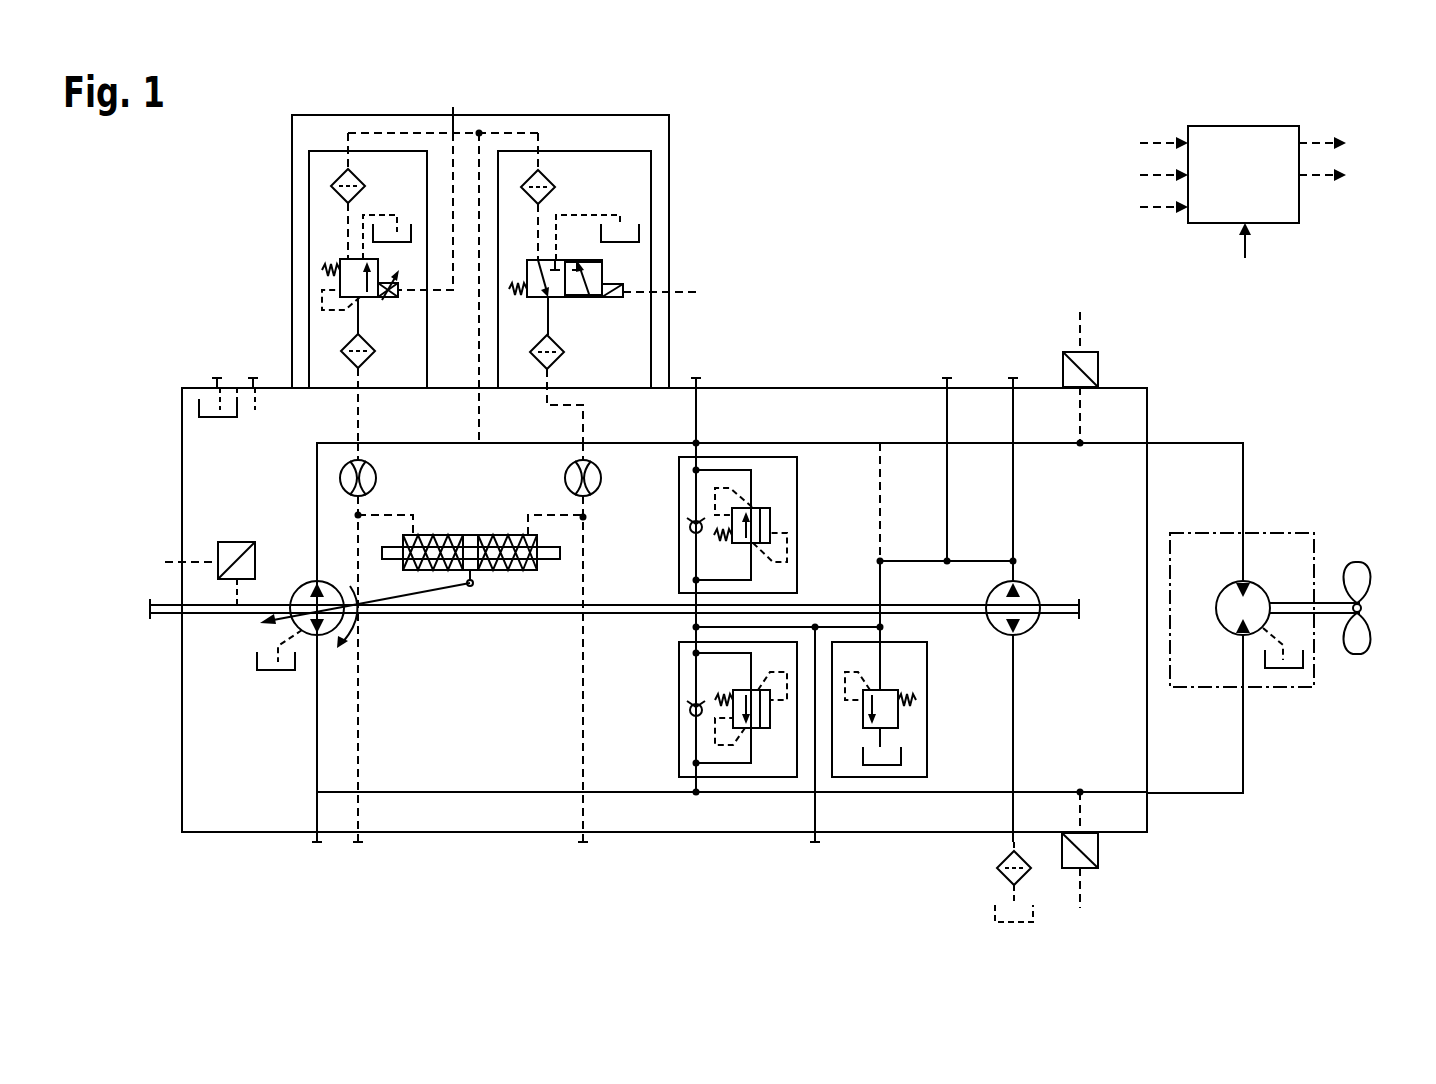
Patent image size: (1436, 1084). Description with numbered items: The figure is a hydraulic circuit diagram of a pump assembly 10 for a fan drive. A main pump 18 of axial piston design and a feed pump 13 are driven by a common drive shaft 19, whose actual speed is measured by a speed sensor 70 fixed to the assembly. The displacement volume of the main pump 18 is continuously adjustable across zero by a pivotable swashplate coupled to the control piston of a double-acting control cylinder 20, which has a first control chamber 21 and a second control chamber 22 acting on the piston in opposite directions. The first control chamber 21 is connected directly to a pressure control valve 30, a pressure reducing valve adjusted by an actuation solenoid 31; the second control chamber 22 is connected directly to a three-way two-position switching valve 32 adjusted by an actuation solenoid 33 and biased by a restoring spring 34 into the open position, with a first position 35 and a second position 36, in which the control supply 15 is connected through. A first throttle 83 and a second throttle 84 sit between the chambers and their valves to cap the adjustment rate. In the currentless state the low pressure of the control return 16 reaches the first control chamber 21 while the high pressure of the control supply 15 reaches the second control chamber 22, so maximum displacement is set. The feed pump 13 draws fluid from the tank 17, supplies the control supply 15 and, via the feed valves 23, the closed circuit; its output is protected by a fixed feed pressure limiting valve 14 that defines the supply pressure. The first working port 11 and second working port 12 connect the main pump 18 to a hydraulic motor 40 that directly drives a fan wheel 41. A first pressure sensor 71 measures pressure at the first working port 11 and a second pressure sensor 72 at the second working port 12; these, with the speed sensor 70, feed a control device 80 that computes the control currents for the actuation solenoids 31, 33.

The pump assembly 10 is at (950, 178).
The first working port 11 is at (1147, 793).
The second working port 12 is at (1147, 443).
The feed pump 13 is at (1028, 630).
The feed pressure limiting valve 14 is at (898, 720).
The control supply 15 is at (485, 170).
The control return 16 is at (365, 237).
The tank 17 is at (375, 242).
The main pump 18 is at (300, 622).
The drive shaft 19 is at (175, 615).
The control cylinder 20 is at (482, 533).
The first control chamber 21 is at (440, 533).
The second control chamber 22 is at (527, 533).
The feed valve 23 is at (680, 530).
The pressure control valve 30 is at (357, 298).
The actuation solenoid of the pressure control valve 31 is at (387, 300).
The 3/2-way switching valve 32 is at (573, 297).
The actuation solenoid of the 3/2-way switching valve 33 is at (617, 297).
The restoring spring 34 is at (520, 290).
The first position 35 is at (548, 260).
The second position 36 is at (602, 273).
The hydraulic motor 40 is at (1257, 582).
The fan wheel 41 is at (1361, 614).
The speed sensor 70 is at (222, 580).
The first pressure sensor 71 is at (1090, 868).
The second pressure sensor 72 is at (1098, 365).
The control device 80 is at (1282, 223).
The first throttle 83 is at (340, 478).
The second throttle 84 is at (587, 497).